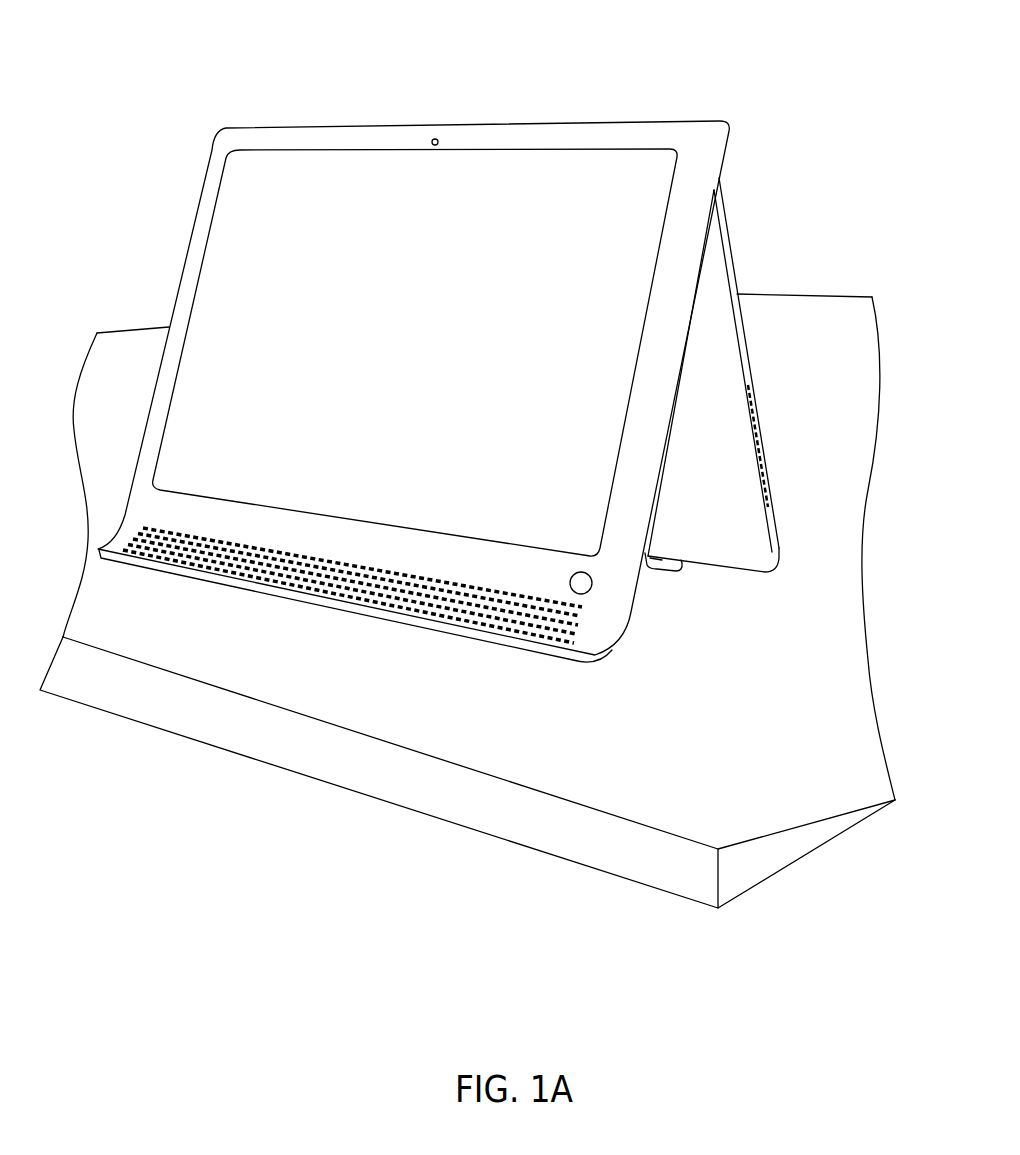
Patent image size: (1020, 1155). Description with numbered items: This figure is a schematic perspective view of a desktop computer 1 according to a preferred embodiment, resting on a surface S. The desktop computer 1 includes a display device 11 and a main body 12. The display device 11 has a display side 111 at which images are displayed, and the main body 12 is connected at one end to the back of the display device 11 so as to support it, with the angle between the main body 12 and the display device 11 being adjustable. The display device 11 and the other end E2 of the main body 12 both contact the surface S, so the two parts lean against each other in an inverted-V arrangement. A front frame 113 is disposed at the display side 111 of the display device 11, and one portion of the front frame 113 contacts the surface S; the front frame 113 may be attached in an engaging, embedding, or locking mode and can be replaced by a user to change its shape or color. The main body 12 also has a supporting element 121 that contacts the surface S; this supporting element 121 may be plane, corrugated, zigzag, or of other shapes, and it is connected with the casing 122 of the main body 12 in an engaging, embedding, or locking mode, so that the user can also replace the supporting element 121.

The desktop computer 1 is at (830, 25).
The display device 11 is at (458, 354).
The main body 12 is at (735, 378).
The display side 111 is at (230, 233).
The front frame 113 is at (183, 307).
The supporting element 121 is at (673, 568).
The casing 122 is at (722, 267).
The other end of the main body E2 is at (655, 566).
The surface S is at (383, 777).